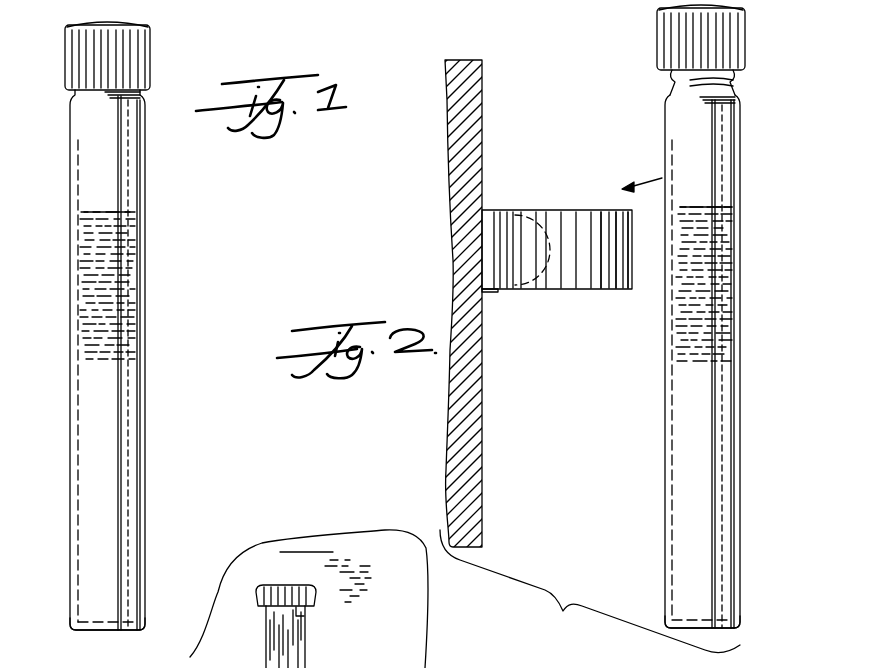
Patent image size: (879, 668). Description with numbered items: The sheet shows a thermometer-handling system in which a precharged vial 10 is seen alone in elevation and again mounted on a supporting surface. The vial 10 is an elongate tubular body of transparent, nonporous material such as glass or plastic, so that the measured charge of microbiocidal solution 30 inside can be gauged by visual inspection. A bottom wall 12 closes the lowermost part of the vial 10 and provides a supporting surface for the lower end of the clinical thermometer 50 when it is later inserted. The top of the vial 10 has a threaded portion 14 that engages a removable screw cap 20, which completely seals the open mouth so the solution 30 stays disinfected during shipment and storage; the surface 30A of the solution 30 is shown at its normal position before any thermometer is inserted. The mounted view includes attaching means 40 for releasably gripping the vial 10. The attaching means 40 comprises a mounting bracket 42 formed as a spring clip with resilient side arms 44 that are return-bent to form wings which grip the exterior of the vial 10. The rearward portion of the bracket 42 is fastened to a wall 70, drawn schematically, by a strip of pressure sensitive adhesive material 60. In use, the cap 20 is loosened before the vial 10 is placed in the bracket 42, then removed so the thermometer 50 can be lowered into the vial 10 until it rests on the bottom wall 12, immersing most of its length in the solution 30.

In FIG. 1, the vial 10 is at (146, 404).
In FIG. 2, the vial 10 is at (742, 454).
In FIG. 1, the bottom wall 12 is at (72, 632).
In FIG. 2, the bottom wall 12 is at (738, 632).
In FIG. 2, the threaded portion 14 is at (726, 80).
In FIG. 1, the removable cap 20 is at (140, 60).
In FIG. 2, the removable cap 20 is at (660, 41).
In FIG. 1, the microbiocidal solution 30 is at (124, 308).
In FIG. 2, the microbiocidal solution 30 is at (711, 250).
In FIG. 1, the surface of the solution 30A is at (102, 210).
In FIG. 2, the surface of the solution 30A is at (700, 206).
In FIG. 2, the attaching means 40 is at (566, 202).
In FIG. 2, the mounting bracket 42 is at (580, 329).
In FIG. 2, the resilient side arms 44 is at (620, 290).
In FIG. 2, the clinical thermometer 50 is at (300, 650).
In FIG. 2, the pressure sensitive adhesive strip 60 is at (487, 293).
In FIG. 2, the wall 70 is at (481, 452).